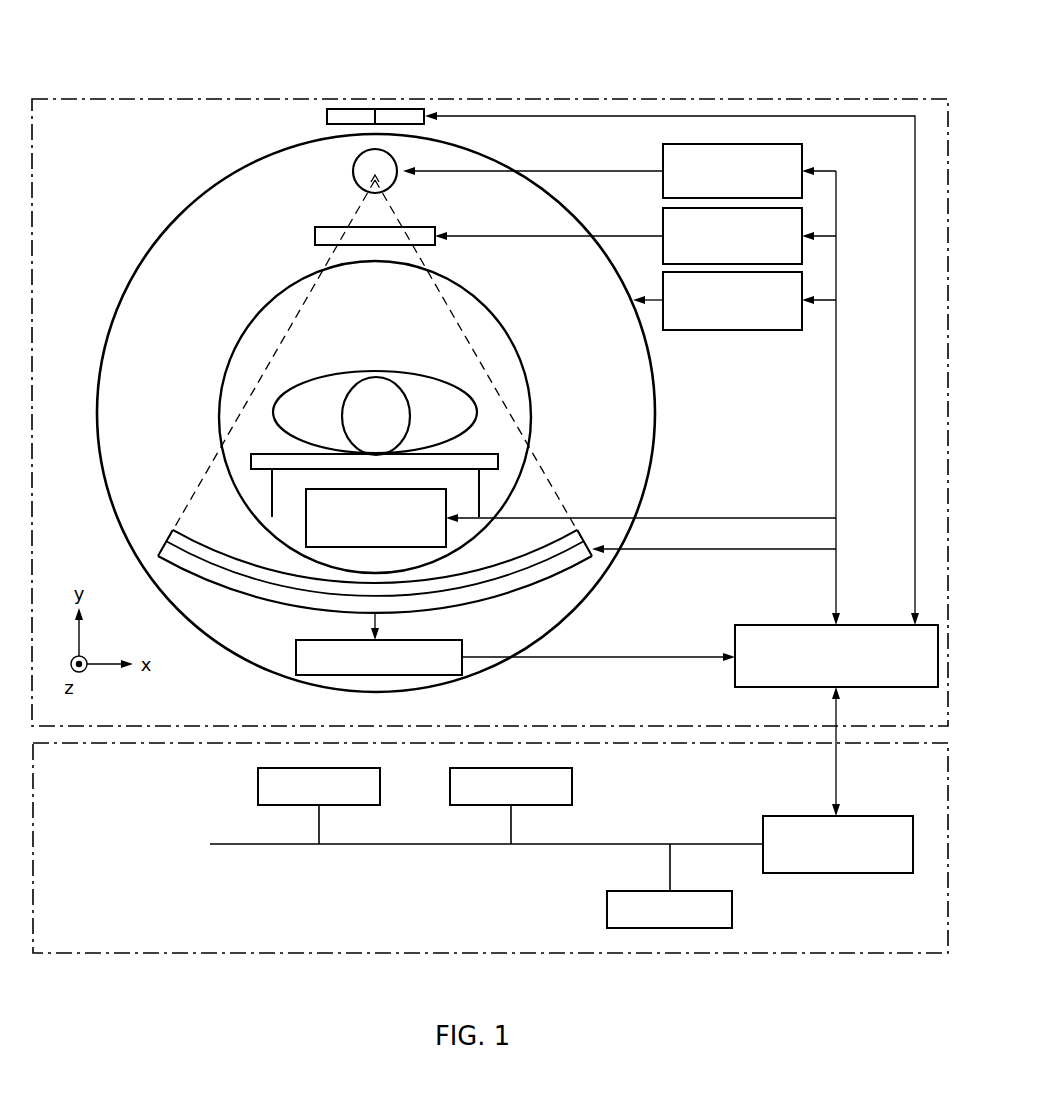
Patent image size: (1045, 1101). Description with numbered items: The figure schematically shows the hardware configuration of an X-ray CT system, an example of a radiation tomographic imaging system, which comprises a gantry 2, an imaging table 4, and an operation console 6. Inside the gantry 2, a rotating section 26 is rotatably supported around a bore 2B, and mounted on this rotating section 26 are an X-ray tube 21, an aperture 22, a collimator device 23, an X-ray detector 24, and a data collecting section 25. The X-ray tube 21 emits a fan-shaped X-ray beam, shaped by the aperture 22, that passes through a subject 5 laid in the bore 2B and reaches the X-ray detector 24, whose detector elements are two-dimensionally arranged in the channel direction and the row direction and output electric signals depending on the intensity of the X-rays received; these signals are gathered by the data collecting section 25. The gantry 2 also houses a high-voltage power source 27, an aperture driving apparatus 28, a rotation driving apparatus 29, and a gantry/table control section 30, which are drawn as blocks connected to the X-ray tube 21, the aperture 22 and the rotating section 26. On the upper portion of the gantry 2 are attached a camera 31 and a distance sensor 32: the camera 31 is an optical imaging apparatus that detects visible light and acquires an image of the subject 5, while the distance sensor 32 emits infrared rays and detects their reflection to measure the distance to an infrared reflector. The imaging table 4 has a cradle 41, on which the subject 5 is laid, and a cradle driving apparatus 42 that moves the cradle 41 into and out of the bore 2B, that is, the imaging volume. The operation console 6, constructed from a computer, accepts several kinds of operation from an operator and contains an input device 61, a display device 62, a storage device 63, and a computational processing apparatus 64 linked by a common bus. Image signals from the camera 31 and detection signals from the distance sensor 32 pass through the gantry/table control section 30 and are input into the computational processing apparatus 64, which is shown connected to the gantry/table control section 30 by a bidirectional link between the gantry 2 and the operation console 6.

The gantry 2 is at (820, 99).
The operation console 6 is at (875, 953).
The rotating section 26 is at (173, 222).
The bore 2B is at (248, 316).
The X-ray tube 21 is at (353, 171).
The aperture 22 is at (315, 236).
The camera 31 is at (400, 110).
The distance sensor 32 is at (345, 110).
The subject 5 is at (400, 372).
The imaging table 4 is at (377, 447).
The cradle 41 is at (263, 469).
The cradle driving apparatus 42 is at (306, 528).
The collimator device 23 is at (170, 532).
The X-ray detector 24 is at (547, 584).
The data collecting section 25 is at (300, 645).
The high-voltage power source 27 is at (802, 160).
The aperture driving apparatus 28 is at (663, 220).
The rotation driving apparatus 29 is at (733, 330).
The gantry/table control section 30 is at (866, 625).
The input device 61 is at (380, 785).
The display device 62 is at (572, 785).
The storage device 63 is at (732, 905).
The computational processing apparatus 64 is at (870, 816).